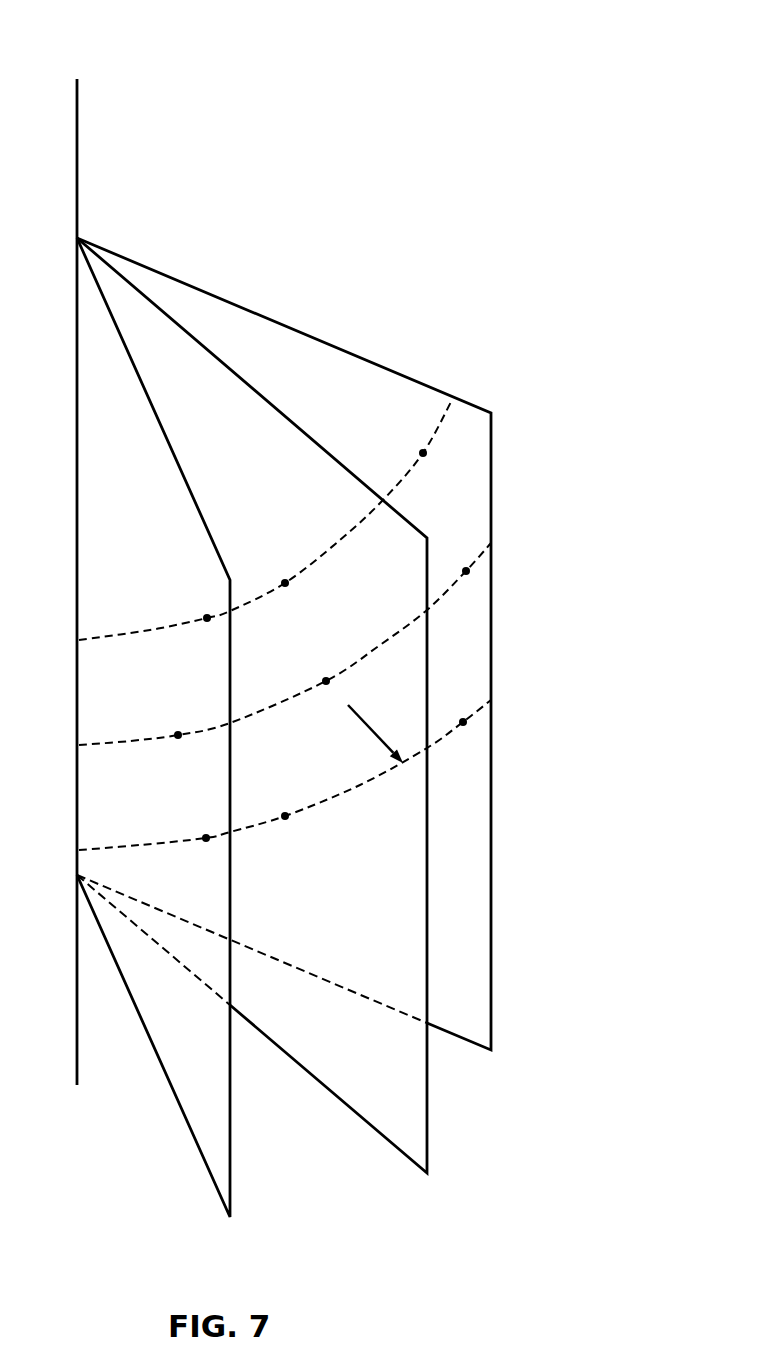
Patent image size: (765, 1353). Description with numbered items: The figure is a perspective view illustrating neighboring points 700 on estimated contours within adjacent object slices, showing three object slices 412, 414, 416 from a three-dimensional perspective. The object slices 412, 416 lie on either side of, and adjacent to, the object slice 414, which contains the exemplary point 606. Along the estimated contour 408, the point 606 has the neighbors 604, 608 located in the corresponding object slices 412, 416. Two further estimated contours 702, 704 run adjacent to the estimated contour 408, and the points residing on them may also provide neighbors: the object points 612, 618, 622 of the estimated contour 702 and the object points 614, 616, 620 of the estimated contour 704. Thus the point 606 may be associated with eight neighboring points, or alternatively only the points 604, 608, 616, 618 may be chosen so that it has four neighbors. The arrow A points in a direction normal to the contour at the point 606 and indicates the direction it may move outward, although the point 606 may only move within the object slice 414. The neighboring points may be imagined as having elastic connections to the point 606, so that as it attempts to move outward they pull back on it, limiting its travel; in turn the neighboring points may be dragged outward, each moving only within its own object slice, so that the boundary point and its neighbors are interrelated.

The neighboring points 700 is at (180, 50).
The object slice 412 is at (220, 297).
The object slice 414 is at (262, 391).
The object slice 416 is at (155, 407).
The estimated contour 702 is at (88, 641).
The estimated contour 408 is at (95, 745).
The estimated contour 704 is at (92, 851).
The object point 612 is at (423, 453).
The object point 618 is at (285, 583).
The object point 622 is at (207, 618).
The neighboring point 604 is at (466, 571).
The point 606 is at (326, 681).
The neighboring point 608 is at (178, 735).
The object point 614 is at (463, 722).
The object point 616 is at (285, 816).
The object point 620 is at (206, 838).
The arrow A is at (360, 714).